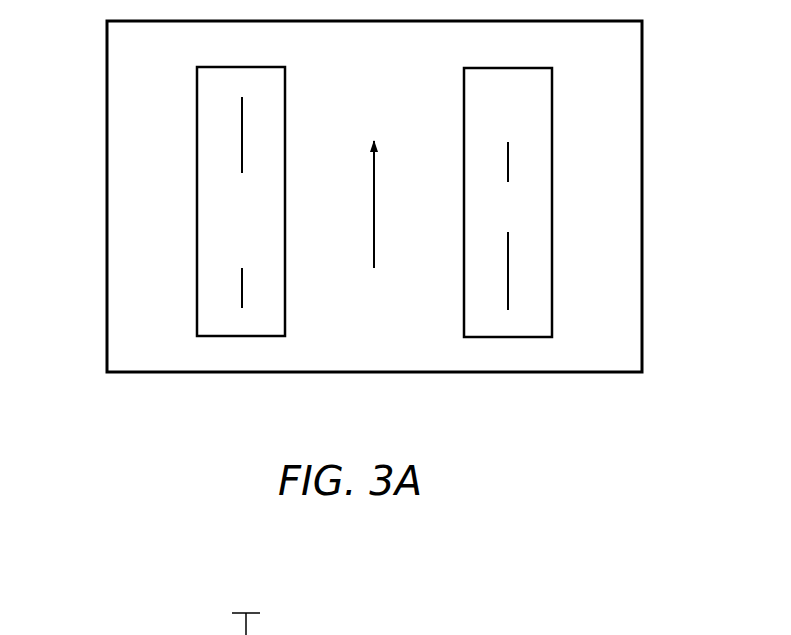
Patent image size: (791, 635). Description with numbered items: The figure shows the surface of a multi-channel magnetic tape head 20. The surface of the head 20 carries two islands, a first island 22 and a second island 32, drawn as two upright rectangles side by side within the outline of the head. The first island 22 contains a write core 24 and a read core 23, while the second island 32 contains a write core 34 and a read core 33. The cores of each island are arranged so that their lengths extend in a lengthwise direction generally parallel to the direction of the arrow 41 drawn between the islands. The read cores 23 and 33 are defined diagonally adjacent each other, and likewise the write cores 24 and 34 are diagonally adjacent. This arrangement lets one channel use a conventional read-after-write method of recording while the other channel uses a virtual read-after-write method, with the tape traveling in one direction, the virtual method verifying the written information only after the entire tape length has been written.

The multi-channel magnetic head 20 is at (575, 358).
The first island 22 is at (218, 323).
The second island 32 is at (492, 325).
The write core 24 is at (240, 142).
The read core 23 is at (240, 297).
The read core 33 is at (510, 165).
The write core 34 is at (510, 265).
The arrow 41 is at (375, 225).